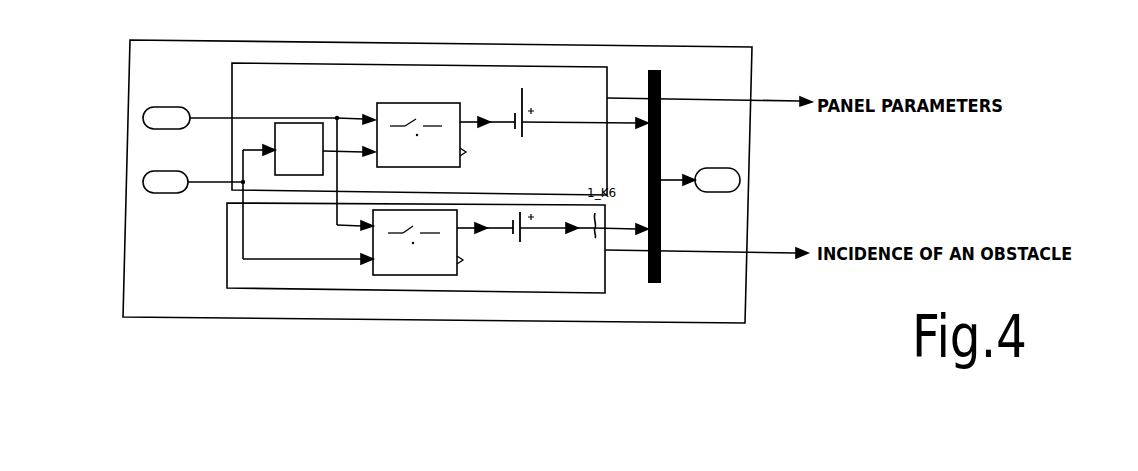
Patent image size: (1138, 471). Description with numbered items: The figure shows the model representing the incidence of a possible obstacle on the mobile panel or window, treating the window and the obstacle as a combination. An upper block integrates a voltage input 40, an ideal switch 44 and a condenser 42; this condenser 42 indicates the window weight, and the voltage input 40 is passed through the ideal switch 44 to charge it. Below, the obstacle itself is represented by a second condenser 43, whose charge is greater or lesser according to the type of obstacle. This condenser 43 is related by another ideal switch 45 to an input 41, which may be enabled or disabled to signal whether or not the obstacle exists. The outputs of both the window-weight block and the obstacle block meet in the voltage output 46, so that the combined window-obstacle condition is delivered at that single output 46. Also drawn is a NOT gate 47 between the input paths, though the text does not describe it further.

The voltage input 40 is at (148, 117).
The input 41 is at (146, 189).
The condenser 42 is at (522, 90).
The condenser 43 is at (521, 235).
The ideal switch 44 is at (413, 103).
The ideal switch 45 is at (457, 275).
The voltage output 46 is at (737, 168).
The NOT logic gate (inverter) 47 is at (297, 123).